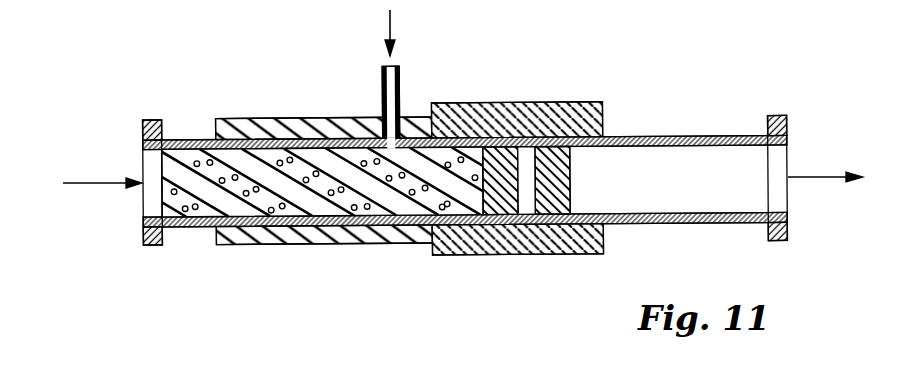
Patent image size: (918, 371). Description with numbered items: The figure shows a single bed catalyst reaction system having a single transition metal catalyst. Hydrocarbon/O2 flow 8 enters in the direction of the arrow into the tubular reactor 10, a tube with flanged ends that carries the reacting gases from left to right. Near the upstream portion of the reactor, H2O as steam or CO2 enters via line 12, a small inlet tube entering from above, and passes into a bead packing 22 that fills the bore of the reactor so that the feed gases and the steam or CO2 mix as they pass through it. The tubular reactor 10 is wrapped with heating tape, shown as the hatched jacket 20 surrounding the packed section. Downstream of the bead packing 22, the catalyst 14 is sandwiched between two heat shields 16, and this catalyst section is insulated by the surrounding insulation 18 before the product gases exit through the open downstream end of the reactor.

The hydrocarbon/O2 flow 8 is at (90, 184).
The tubular reactor 10 is at (655, 136).
The line 12 is at (383, 80).
The catalyst 14 is at (527, 148).
The heat shields 16 is at (501, 216).
The insulation 18 is at (460, 255).
The heating block / jacket 20 is at (322, 243).
The bead packing 22 is at (210, 200).